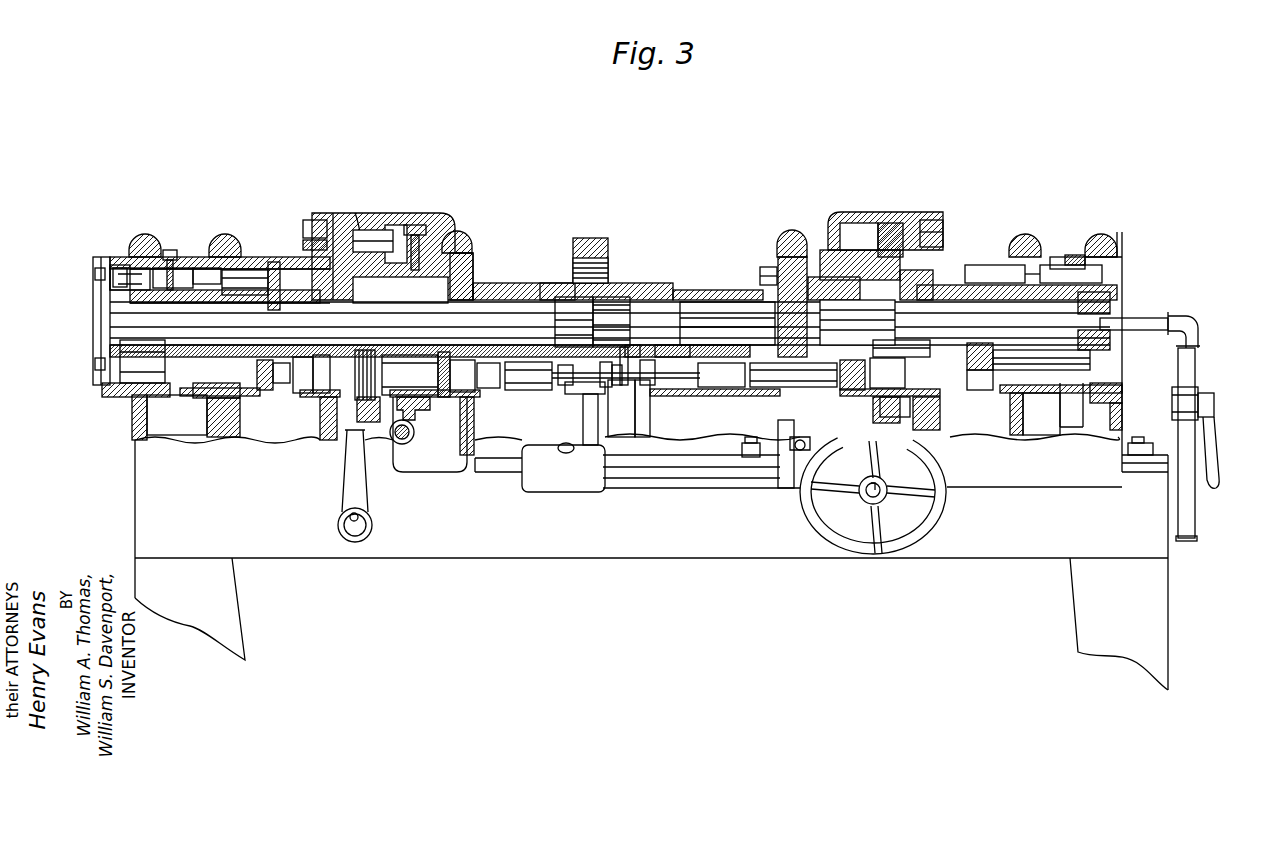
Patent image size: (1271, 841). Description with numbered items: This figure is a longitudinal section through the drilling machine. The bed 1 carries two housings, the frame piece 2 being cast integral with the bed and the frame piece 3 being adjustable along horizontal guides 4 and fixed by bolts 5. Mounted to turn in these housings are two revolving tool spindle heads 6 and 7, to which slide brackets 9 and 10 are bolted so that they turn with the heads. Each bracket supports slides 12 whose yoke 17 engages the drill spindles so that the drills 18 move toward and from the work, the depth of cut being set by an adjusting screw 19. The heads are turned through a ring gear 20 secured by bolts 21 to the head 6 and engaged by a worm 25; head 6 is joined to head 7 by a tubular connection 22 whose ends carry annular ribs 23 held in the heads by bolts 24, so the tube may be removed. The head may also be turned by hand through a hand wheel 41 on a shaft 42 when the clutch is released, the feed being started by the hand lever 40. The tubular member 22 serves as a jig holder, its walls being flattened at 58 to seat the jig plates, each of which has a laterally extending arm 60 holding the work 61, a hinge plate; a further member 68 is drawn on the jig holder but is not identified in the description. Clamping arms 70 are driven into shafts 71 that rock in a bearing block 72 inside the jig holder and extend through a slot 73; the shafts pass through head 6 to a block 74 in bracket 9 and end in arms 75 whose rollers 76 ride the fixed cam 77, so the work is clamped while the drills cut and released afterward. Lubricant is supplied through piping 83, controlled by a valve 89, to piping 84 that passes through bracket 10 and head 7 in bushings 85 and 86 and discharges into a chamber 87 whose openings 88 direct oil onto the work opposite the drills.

The bed 1 is at (400, 560).
The housing or frame piece 2 is at (386, 213).
The housing or frame piece 3 is at (846, 214).
The horizontal guides 4 is at (1152, 474).
The bolts 5 is at (752, 443).
The revolving tool spindle head 6 is at (460, 246).
The revolving tool spindle head 7 is at (892, 248).
The slide bracket 9 is at (235, 266).
The slide bracket 10 is at (976, 280).
The slide 12 is at (207, 268).
The projection or yoke 17 is at (262, 268).
The drills 18 is at (562, 390).
The adjusting screw 19 is at (173, 280).
The ring gear 20 is at (415, 236).
The bolts 21 is at (426, 238).
The tubular connection 22 is at (548, 285).
The annular ribs 23 is at (502, 302).
The bolts 24 is at (485, 283).
The worm 25 is at (410, 438).
The hand or feed starting lever 40 is at (350, 490).
The hand wheel 41 is at (925, 530).
The shaft 42 is at (876, 556).
The flattened walls 58 is at (616, 292).
The arm 60 is at (642, 440).
The work 61 is at (625, 432).
The bearing block 68 is at (582, 242).
The clamping device 70 is at (632, 354).
The shaft or rod 71 is at (510, 318).
The bearing block 72 is at (580, 312).
The opening or slot 73 is at (624, 362).
The block 74 is at (162, 338).
The arm 75 is at (90, 280).
The roller 76 is at (116, 266).
The cam or fixed member 77 is at (100, 380).
The piping 83 is at (1196, 512).
The piping 84 is at (1130, 324).
The bushing 85 is at (1108, 297).
The bushing 86 is at (762, 283).
The chamber 87 is at (710, 318).
The discharge openings 88 is at (658, 351).
The valve 89 is at (1210, 397).